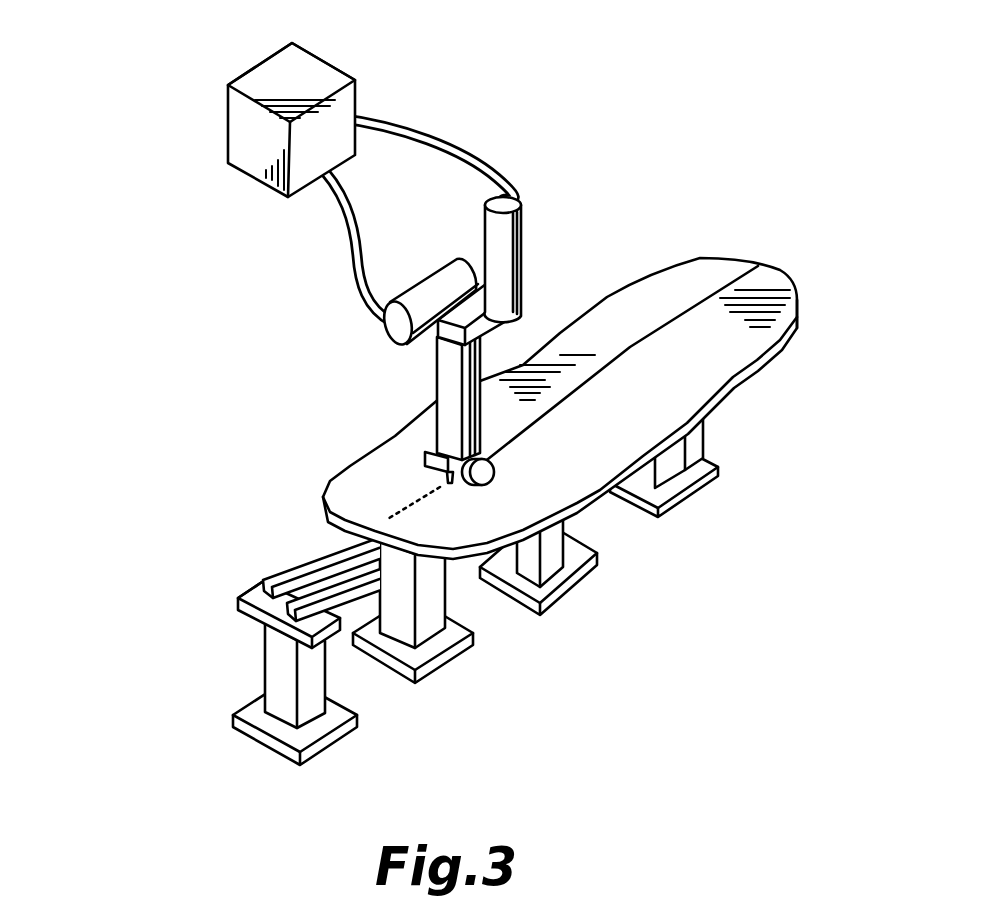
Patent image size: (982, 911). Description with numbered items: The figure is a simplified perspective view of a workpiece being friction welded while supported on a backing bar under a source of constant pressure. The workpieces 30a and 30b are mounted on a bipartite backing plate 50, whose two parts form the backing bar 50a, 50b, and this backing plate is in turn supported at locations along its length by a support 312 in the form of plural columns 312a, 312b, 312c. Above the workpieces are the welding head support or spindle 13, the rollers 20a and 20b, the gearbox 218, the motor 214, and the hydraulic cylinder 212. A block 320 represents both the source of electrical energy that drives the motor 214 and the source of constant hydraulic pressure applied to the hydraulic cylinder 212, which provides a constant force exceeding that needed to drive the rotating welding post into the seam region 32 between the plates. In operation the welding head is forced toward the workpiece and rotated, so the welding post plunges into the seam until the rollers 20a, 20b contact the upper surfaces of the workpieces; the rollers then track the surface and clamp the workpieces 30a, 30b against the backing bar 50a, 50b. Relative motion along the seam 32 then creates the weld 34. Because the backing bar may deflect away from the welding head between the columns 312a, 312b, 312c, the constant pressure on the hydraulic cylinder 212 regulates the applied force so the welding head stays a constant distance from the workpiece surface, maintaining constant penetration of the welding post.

The block 320 is at (327, 62).
The hydraulic cylinder 212 is at (520, 200).
The motor 214 is at (412, 288).
The gearbox 218 is at (522, 290).
The welding head support or spindle 13 is at (437, 373).
The roller 20a is at (425, 459).
The roller 20b is at (495, 470).
The weld 34 is at (428, 505).
The workpiece 30a is at (700, 260).
The workpiece 30b is at (798, 303).
The seam region 32 is at (625, 352).
The bipartite backing plate 50 is at (276, 625).
The backing bar 50a is at (286, 571).
The backing bar 50b is at (360, 587).
The support 312 is at (395, 590).
The column 312a is at (265, 652).
The column 312b is at (445, 597).
The column 312c is at (563, 530).